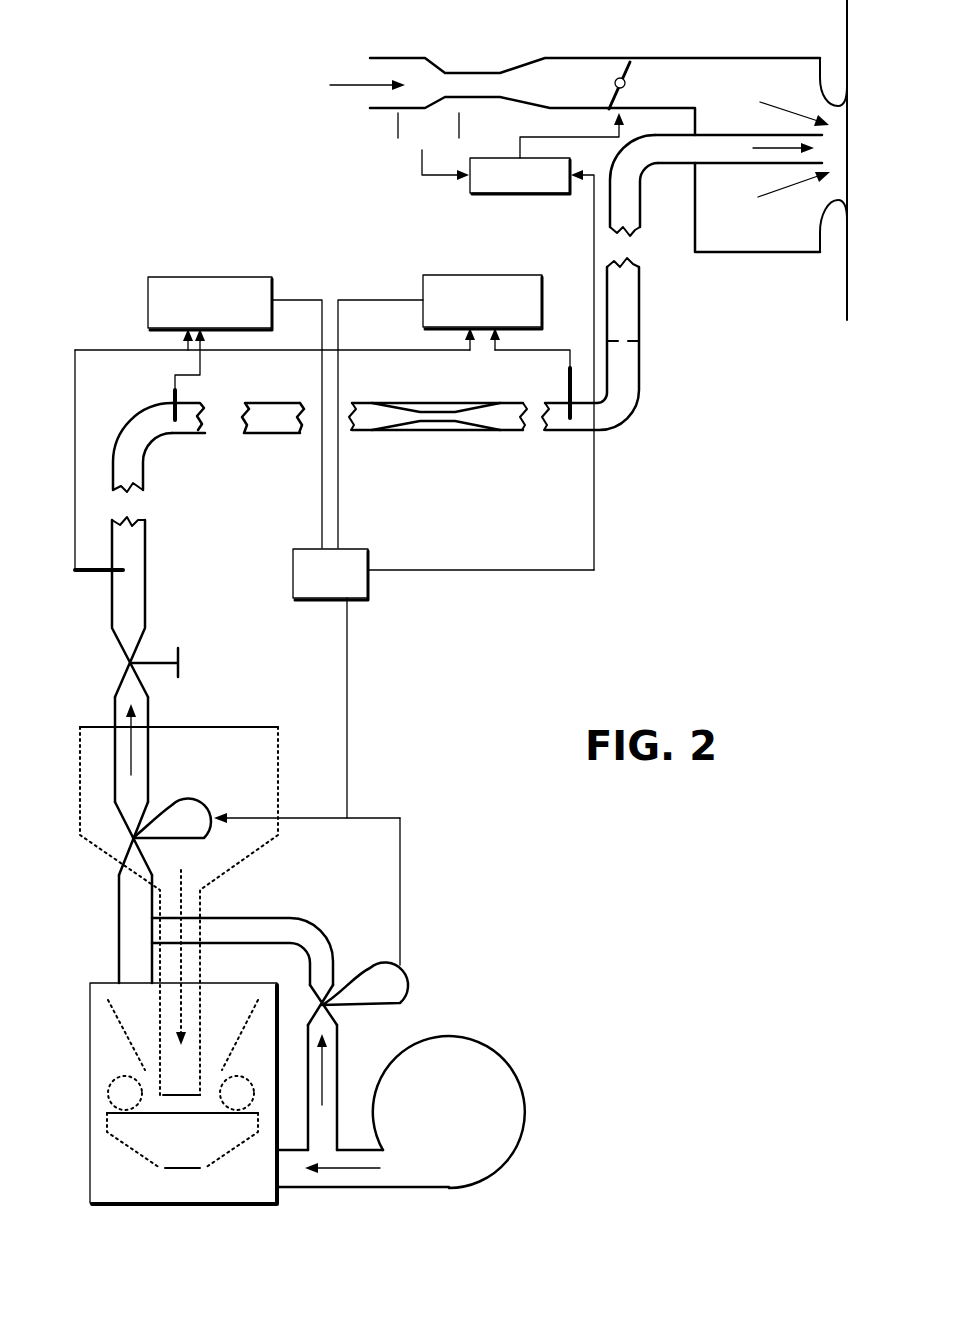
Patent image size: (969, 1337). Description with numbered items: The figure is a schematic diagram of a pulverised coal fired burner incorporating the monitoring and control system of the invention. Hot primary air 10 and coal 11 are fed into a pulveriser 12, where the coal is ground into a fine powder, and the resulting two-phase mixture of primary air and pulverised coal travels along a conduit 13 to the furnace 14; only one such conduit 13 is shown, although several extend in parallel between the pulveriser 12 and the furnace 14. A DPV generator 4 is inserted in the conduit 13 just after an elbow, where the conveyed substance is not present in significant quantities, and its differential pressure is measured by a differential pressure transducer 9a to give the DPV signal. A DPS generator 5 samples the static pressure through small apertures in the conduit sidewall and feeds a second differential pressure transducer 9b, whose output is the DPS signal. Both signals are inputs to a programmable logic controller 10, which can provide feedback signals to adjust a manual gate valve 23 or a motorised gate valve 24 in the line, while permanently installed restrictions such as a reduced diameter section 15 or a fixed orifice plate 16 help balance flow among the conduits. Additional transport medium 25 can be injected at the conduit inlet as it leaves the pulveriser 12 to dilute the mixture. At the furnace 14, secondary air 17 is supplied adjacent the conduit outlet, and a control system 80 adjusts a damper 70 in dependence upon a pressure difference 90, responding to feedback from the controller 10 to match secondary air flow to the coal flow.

The secondary air 17 is at (333, 85).
The pressure difference 90 is at (428, 129).
The control system 80 is at (523, 341).
The damper 70 is at (645, 85).
The furnace 14 is at (896, 279).
The differential pressure transducer 9a is at (210, 276).
The differential pressure transducer 9b is at (483, 275).
The DPV generator 4 is at (157, 394).
The DPS generator 5 is at (322, 480).
The manual gate valve 23 is at (170, 550).
The reduced diameter section 15 is at (440, 432).
The conduit 13 is at (637, 410).
The fixed orifice plate 16 is at (632, 347).
The programmable logic controller 10 is at (510, 1133).
The coal 11 is at (268, 746).
The motorised gate valve 24 is at (286, 923).
The additional transport medium 25 is at (242, 926).
The pulveriser 12 is at (194, 1154).